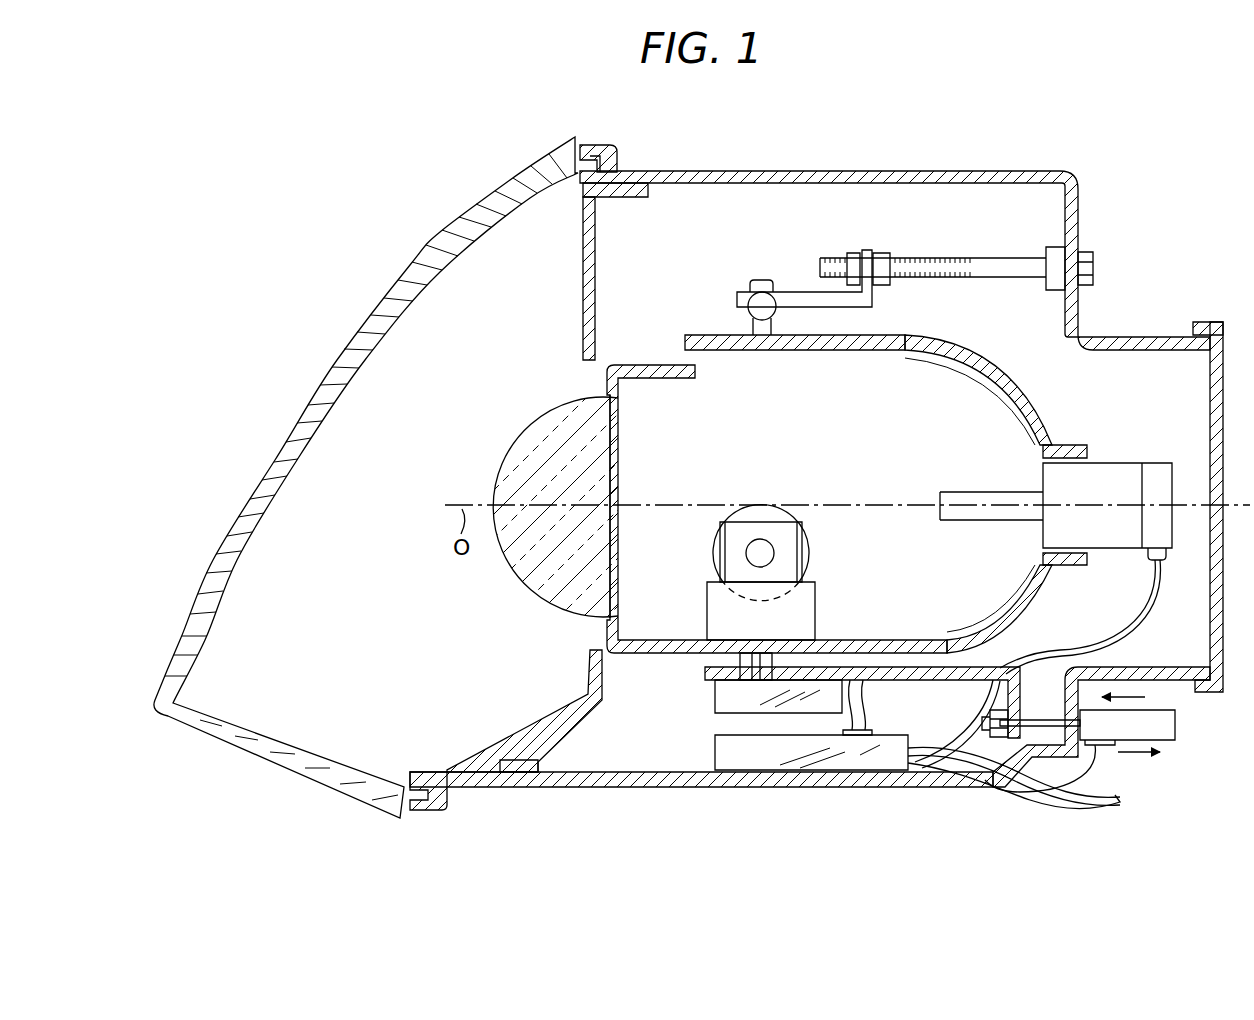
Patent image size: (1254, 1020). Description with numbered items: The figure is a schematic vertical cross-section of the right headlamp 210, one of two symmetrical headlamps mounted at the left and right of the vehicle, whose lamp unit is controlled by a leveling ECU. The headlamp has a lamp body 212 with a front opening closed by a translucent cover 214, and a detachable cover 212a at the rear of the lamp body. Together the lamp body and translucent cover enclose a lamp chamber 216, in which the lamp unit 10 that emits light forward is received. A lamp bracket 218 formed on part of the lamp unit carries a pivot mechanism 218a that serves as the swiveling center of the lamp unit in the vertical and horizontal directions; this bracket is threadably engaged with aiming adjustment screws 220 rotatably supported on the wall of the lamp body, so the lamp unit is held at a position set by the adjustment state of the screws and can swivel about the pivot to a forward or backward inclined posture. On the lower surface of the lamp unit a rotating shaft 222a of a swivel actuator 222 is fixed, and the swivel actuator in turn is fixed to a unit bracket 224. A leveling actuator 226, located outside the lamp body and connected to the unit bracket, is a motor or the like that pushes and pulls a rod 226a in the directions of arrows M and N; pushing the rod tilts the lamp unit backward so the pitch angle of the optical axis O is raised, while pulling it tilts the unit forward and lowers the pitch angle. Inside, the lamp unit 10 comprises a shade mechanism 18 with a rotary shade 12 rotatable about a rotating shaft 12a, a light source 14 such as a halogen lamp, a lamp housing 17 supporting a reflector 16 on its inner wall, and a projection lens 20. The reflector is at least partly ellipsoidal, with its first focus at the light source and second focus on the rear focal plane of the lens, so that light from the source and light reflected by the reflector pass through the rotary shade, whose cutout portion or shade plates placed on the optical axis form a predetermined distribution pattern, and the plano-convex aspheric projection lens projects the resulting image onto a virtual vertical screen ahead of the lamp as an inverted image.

The headlamp 210 is at (962, 166).
The lamp body 212 is at (777, 169).
The detachable cover 212a is at (1205, 322).
The translucent cover 214 is at (412, 263).
The lamp chamber 216 is at (530, 315).
The lamp bracket 218 is at (806, 296).
The pivot mechanism 218a is at (750, 310).
The aiming adjustment screws 220 is at (1003, 264).
The lamp unit 10 is at (658, 360).
The rotary shade 12 is at (772, 511).
The rotating shaft 12a is at (768, 553).
The light source 14 is at (983, 492).
The reflector 16 is at (906, 353).
The lamp housing 17 is at (990, 363).
The shade mechanism 18 is at (757, 500).
The projection lens 20 is at (546, 432).
The swivel actuator 222 is at (722, 697).
The rotating shaft 222a is at (742, 664).
The unit bracket 224 is at (905, 681).
The leveling actuator 226 is at (1176, 725).
The rod 226a is at (1047, 720).